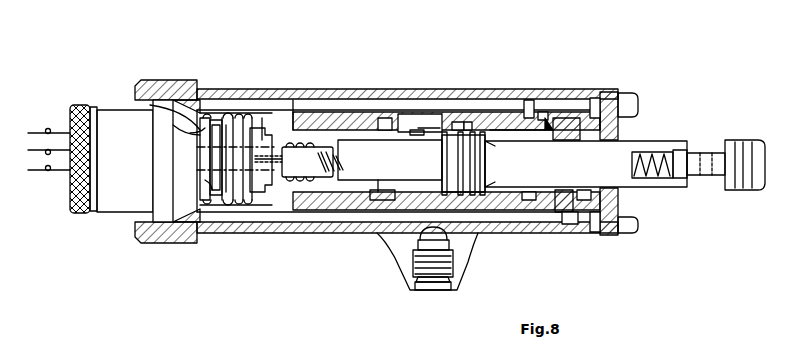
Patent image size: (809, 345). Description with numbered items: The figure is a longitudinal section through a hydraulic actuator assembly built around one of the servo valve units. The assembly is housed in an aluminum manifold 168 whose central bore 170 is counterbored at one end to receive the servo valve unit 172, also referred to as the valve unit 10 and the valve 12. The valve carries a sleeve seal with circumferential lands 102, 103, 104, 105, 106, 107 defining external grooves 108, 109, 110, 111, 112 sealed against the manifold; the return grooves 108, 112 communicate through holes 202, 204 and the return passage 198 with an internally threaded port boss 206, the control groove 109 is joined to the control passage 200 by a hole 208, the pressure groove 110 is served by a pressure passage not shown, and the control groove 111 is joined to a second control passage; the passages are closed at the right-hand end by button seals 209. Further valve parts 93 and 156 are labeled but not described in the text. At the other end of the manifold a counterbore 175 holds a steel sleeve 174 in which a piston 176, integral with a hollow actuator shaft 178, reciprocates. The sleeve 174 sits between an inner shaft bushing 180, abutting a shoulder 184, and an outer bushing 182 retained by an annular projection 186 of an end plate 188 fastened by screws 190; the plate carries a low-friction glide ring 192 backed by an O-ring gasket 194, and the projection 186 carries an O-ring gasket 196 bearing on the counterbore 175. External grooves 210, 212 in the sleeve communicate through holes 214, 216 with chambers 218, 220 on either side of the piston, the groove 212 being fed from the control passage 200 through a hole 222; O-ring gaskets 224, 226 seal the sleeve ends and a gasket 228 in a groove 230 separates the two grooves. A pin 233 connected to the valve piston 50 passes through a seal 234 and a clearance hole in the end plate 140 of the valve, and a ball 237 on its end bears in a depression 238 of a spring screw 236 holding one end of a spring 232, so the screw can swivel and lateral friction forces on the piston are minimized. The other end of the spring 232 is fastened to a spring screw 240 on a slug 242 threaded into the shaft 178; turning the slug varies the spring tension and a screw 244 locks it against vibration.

The servo valve unit 10 is at (109, 232).
The valve 12 is at (233, 173).
The piston 50 is at (226, 150).
The spacer 93 is at (243, 160).
The circumferential land 102 is at (150, 105).
The circumferential land 103 is at (190, 133).
The circumferential land 104 is at (197, 147).
The circumferential land 105 is at (197, 170).
The circumferential land 106 is at (230, 160).
The circumferential land 107 is at (250, 206).
The return groove 108 is at (205, 208).
The control groove 109 is at (218, 210).
The pressure groove 110 is at (205, 180).
The control groove 111 is at (226, 210).
The return groove 112 is at (240, 206).
The end plate 140 is at (262, 182).
The detector element 156 is at (214, 150).
The manifold 168 is at (321, 252).
The central bore 170 is at (333, 184).
The servo valve unit 172 is at (155, 252).
The sleeve 174 is at (473, 196).
The counterbore 175 is at (498, 193).
The piston 176 is at (460, 196).
The actuator shaft 178 is at (347, 165).
The shaft bushing 180 is at (383, 190).
The shaft bushing 182 is at (565, 190).
The shoulder 184 is at (378, 207).
The annular projection 186 is at (578, 140).
The end plate 188 is at (618, 202).
The screws 190 is at (632, 98).
The glide ring 192 is at (600, 192).
The O-ring gasket 194 is at (618, 131).
The O-ring gasket 196 is at (578, 214).
The return passage 198 is at (375, 215).
The control passage 200 is at (465, 112).
The hole 202 is at (215, 232).
The hole 204 is at (232, 208).
The manifold port boss 206 is at (413, 266).
The hole 208 is at (178, 135).
The button seals 209 is at (595, 98).
The external circumferential groove 210 is at (412, 114).
The external circumferential groove 212 is at (528, 100).
The hole 214 is at (412, 136).
The hole 216 is at (529, 192).
The chamber 218 is at (427, 132).
The chamber 220 is at (505, 130).
The hole 222 is at (545, 112).
The O-ring gasket 224 is at (385, 118).
The O-ring gasket 226 is at (552, 130).
The gasket 228 is at (466, 122).
The circumferential groove 230 is at (456, 122).
The spring 232 is at (339, 152).
The pin 233 is at (256, 150).
The seal 234 is at (262, 120).
The spring screw 236 is at (298, 145).
The ball 237 is at (322, 152).
The depression 238 is at (330, 150).
The spring screw 240 is at (680, 150).
The slug 242 is at (717, 153).
The screw 244 is at (765, 165).